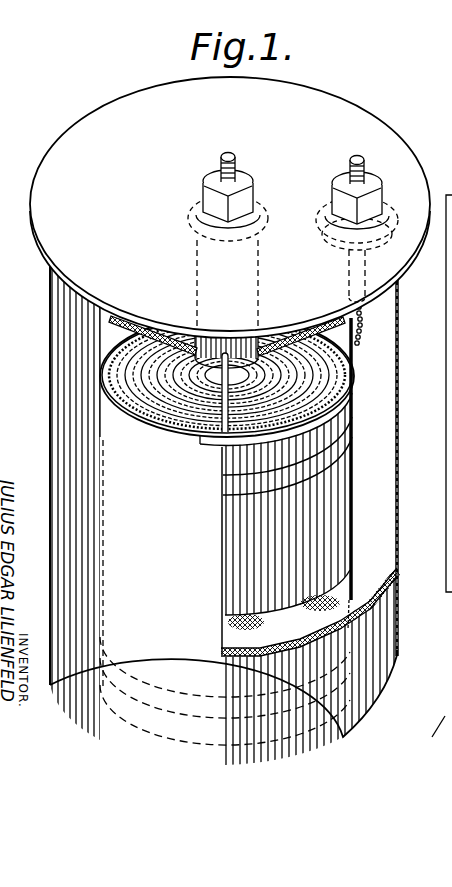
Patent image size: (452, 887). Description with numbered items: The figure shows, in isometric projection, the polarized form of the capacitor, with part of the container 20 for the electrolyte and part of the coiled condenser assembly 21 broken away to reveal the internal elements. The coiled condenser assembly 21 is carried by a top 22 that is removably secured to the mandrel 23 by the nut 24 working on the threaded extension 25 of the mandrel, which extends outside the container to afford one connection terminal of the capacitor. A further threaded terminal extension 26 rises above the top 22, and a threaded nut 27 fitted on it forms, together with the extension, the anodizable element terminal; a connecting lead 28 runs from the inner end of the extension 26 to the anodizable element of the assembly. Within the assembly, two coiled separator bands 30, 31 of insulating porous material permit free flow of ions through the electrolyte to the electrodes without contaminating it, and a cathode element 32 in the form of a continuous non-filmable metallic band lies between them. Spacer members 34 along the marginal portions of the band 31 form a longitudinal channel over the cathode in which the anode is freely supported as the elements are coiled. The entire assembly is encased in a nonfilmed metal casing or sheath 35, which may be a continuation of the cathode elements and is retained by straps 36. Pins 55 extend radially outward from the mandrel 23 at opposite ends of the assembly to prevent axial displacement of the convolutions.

The container 20 is at (51, 430).
The coiled condenser assembly 21 is at (100, 375).
The top 22 is at (78, 245).
The mandrel 23 is at (228, 341).
The nut 24 is at (218, 206).
The threaded extension 25 is at (207, 170).
The threaded terminal extension 26 is at (371, 166).
The threaded nut 27 is at (378, 200).
The connecting lead 28 is at (362, 318).
The coiled separator band 30 is at (333, 580).
The coiled separator band 31 is at (353, 406).
The cathode element 32 is at (354, 372).
The spacer members 34 is at (353, 358).
The casing or sheath 35 is at (328, 423).
The straps 36 is at (327, 453).
The pins 55 is at (147, 338).